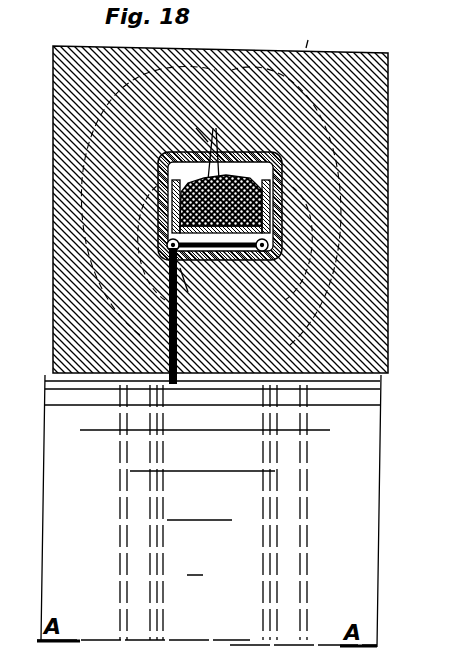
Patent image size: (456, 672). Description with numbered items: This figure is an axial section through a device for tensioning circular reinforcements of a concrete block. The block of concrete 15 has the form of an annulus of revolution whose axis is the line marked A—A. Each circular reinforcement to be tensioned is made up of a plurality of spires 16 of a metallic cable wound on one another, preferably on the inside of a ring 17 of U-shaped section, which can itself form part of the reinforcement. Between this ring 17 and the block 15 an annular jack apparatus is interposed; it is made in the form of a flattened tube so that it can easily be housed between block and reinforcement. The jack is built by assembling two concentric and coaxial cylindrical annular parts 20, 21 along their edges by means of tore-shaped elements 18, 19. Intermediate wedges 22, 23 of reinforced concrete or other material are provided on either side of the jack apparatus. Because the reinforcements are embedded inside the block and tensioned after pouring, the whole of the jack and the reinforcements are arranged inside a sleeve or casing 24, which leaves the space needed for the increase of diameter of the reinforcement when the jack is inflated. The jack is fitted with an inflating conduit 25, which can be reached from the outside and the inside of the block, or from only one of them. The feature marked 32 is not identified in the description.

The block of concrete 15 is at (332, 70).
The spires of metallic cable 16 is at (230, 128).
The ring of U-shaped section 17 is at (272, 193).
The tore-shaped element 18 is at (168, 245).
The tore-shaped element 19 is at (282, 245).
The cylindrical annular part 20 is at (207, 282).
The cylindrical annular part 21 is at (166, 220).
The intermediate wedge 22 is at (246, 262).
The intermediate wedge 23 is at (194, 288).
The sleeve or casing 24 is at (189, 127).
The inflating conduit 25 is at (180, 382).
The top edge 32 is at (313, 33).